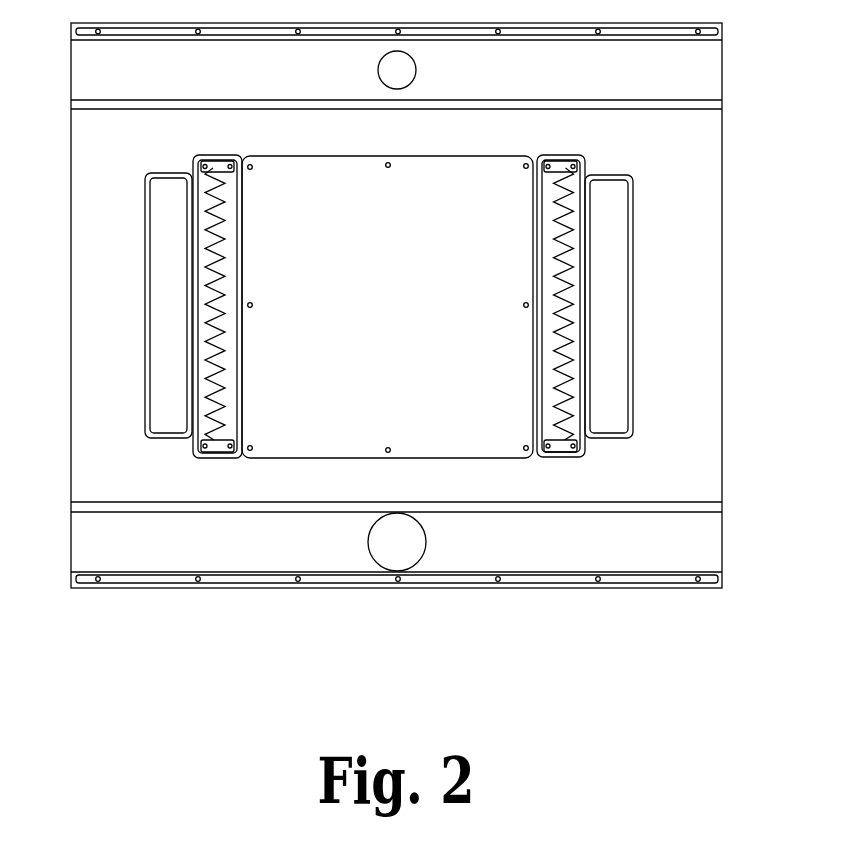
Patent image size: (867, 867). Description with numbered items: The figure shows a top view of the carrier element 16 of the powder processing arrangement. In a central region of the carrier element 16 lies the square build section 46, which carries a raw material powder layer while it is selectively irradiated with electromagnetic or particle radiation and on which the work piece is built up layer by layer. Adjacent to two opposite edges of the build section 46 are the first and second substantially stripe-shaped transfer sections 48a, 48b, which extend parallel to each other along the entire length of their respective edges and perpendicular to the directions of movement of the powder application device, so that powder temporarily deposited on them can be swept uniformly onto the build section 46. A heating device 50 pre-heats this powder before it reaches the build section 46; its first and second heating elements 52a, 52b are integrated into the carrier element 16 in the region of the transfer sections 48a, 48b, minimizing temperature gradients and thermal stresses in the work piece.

The carrier element 16 is at (750, 121).
The build section 46 is at (403, 223).
The first transfer section 48a is at (210, 166).
The second transfer section 48b is at (565, 167).
The heating device 50 is at (542, 486).
The first heating element 52a is at (216, 432).
The second heating element 52b is at (576, 426).